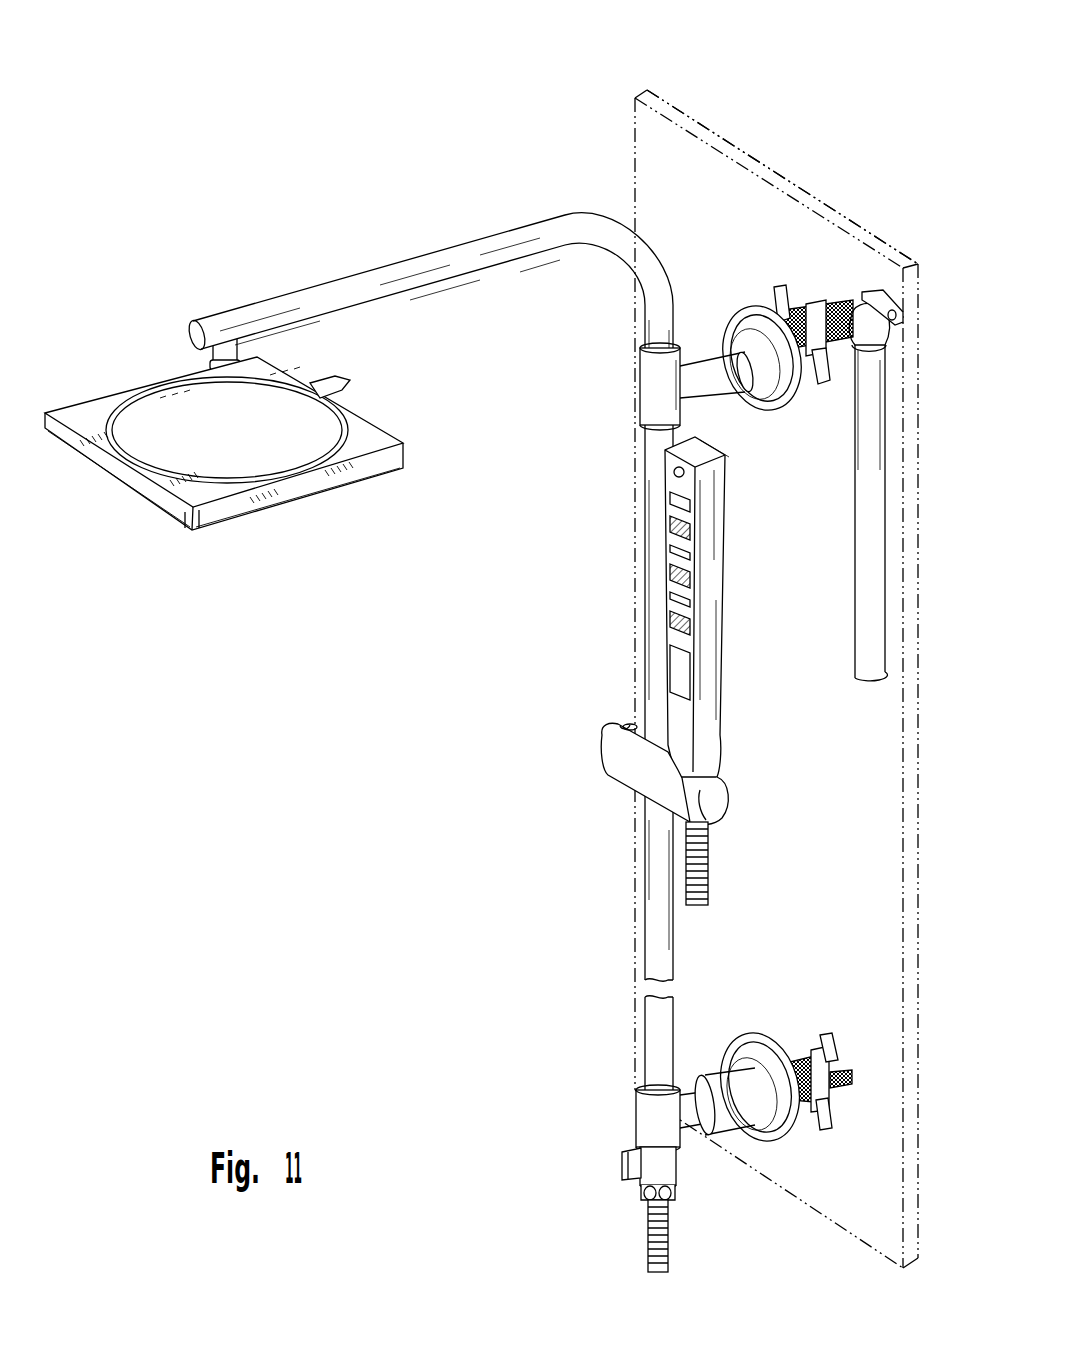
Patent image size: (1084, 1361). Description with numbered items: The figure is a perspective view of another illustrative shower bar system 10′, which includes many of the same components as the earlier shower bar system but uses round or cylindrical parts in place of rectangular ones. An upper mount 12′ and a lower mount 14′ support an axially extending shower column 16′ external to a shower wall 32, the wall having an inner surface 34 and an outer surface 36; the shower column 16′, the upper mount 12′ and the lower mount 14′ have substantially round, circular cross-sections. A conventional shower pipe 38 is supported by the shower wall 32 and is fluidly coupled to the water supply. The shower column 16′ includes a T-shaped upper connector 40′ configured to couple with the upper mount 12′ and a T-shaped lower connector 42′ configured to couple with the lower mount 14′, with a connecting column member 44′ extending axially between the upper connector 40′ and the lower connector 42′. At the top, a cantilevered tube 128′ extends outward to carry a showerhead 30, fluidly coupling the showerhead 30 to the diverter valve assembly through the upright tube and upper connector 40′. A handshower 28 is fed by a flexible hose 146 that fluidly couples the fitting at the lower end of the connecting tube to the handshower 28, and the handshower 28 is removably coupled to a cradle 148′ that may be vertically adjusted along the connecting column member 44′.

The shower bar system 10′ is at (474, 656).
The upper mount 12′ is at (800, 278).
The lower mount 14′ is at (778, 1024).
The shower column 16′ is at (622, 895).
The handshower 28 is at (738, 604).
The showerhead 30 is at (172, 545).
The shower wall 32 is at (752, 148).
The inner surface 34 is at (860, 230).
The outer surface 36 is at (750, 247).
The shower pipe 38 is at (847, 357).
The upper connector 40′ is at (653, 390).
The lower connector 42′ is at (640, 1100).
The connecting column member 44′ is at (645, 975).
The cantilevered tube 128′ is at (503, 243).
The flexible hose 146 is at (709, 863).
The cradle 148′ is at (605, 752).